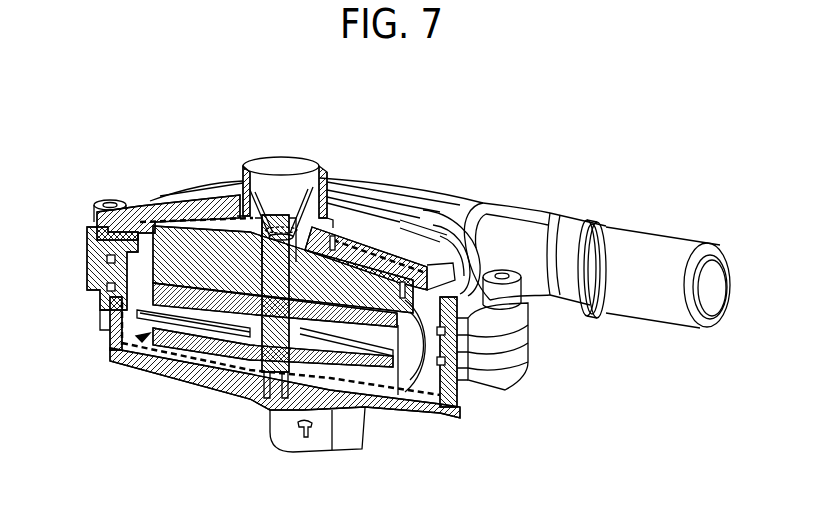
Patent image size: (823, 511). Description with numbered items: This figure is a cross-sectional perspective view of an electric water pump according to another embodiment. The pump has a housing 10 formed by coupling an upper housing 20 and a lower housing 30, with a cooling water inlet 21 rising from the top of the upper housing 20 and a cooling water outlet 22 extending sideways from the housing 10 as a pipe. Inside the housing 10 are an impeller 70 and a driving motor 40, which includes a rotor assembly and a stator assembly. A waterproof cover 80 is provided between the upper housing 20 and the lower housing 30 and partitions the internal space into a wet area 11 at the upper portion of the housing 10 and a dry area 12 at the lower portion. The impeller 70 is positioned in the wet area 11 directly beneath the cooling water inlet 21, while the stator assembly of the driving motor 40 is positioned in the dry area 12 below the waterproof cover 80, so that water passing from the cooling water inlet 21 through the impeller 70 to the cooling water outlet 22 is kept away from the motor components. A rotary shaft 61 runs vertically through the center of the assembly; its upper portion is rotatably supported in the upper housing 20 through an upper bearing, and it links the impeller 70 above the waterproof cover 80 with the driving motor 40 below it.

The housing 10 is at (44, 228).
The wet area 11 is at (183, 213).
The dry area 12 is at (152, 352).
The upper housing 20 is at (115, 243).
The cooling water inlet 21 is at (276, 163).
The cooling water outlet 22 is at (710, 292).
The lower housing 30 is at (112, 320).
The driving motor 40 is at (115, 354).
The rotary shaft 61 is at (262, 360).
The impeller 70 is at (355, 270).
The waterproof cover 80 is at (440, 313).